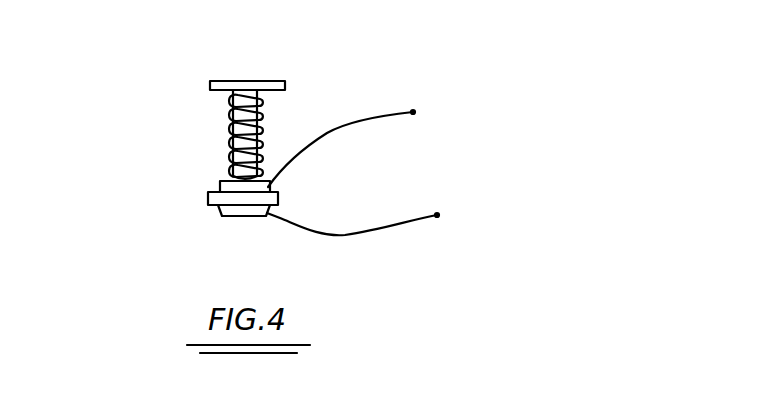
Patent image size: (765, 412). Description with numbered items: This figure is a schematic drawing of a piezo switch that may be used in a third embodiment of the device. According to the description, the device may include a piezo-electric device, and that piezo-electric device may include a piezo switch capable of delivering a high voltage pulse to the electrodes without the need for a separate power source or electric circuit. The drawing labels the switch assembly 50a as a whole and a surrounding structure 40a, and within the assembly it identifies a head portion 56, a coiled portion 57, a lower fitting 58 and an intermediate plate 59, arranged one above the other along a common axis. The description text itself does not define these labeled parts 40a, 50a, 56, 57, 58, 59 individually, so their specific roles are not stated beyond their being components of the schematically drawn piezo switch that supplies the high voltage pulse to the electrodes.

The panel 40a is at (423, 113).
The fastener assembly 50a is at (483, 85).
The bolt head 56 is at (275, 82).
The spring 57 is at (227, 132).
The nut 58 is at (217, 184).
The washer plate 59 is at (280, 198).